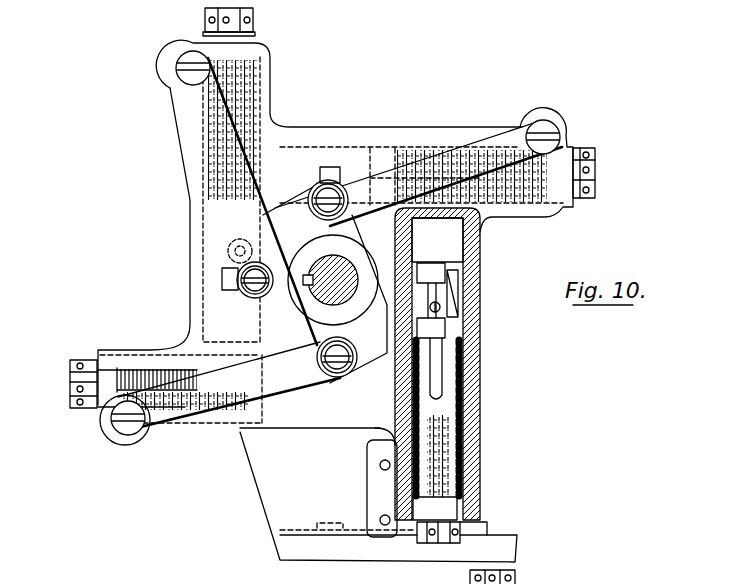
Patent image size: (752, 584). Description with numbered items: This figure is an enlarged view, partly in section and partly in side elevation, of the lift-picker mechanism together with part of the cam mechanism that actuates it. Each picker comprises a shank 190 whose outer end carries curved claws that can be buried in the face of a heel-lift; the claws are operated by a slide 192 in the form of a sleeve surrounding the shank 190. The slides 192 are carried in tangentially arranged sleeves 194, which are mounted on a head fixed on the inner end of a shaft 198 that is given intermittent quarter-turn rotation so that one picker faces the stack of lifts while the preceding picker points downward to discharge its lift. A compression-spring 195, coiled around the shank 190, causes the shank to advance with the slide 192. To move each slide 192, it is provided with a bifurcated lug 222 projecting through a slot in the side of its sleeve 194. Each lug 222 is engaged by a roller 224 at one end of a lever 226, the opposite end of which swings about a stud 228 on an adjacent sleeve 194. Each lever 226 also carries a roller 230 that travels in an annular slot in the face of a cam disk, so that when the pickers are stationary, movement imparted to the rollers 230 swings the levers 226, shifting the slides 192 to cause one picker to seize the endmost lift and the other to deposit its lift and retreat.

The shank 190 is at (253, 31).
The slide 192 is at (457, 326).
The sleeve 194 is at (267, 84).
The compression-spring 195 is at (473, 417).
The shaft 198 is at (337, 253).
The bifurcated lug 222 is at (329, 165).
The roller 224 is at (228, 252).
The lever 226 is at (199, 134).
The stud 228 is at (178, 62).
The roller 230 is at (312, 190).